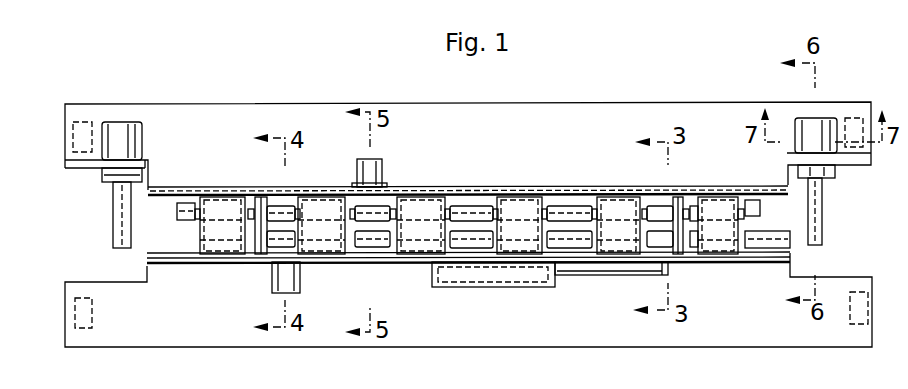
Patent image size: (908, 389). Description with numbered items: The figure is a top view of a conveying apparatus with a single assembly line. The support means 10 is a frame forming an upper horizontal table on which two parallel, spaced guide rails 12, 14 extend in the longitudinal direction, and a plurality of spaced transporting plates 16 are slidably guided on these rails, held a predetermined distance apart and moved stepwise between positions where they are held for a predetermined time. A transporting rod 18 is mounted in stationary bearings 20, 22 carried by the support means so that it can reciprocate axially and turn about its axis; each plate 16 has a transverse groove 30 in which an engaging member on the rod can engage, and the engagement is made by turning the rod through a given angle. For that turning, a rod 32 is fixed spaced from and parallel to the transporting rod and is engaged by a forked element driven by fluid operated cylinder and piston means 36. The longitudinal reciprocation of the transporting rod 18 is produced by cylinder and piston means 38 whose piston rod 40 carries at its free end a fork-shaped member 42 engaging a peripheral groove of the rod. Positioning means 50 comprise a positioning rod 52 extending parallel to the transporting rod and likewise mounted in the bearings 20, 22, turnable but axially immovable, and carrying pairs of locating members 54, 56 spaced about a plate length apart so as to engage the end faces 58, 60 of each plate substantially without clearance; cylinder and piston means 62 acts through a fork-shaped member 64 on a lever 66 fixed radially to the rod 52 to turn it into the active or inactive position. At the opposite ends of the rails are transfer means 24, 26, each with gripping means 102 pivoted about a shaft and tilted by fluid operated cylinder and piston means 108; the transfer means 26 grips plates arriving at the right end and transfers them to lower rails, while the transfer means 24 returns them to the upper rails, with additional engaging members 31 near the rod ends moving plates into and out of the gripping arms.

The support means 10 is at (690, 102).
The guide rail 12 is at (163, 192).
The guide rail 14 is at (178, 255).
The transporting plate 16 is at (515, 200).
The transporting rod 18 is at (800, 255).
The bearing 20 is at (261, 205).
The bearing 22 is at (675, 198).
The transfer means 24 is at (97, 187).
The transfer means 26 is at (841, 177).
The transverse groove 30 is at (722, 200).
The additional engaging member 31 is at (798, 230).
The rod 32 is at (371, 250).
The cylinder and piston means 36 is at (268, 279).
The cylinder and piston means 38 is at (488, 289).
The piston rod 40 is at (607, 277).
The fork-shaped member 42 is at (669, 266).
The positioning means 50 is at (176, 218).
The positioning rod 52 is at (282, 210).
The locating member 54 is at (480, 200).
The locating member 56 is at (553, 200).
The end face 58 is at (385, 200).
The end face 60 is at (462, 195).
The cylinder and piston means 62 is at (363, 158).
The fork-shaped member 64 is at (358, 250).
The lever 66 is at (390, 250).
The gripping means 102 is at (108, 228).
The cylinder and piston means 108 is at (127, 119).